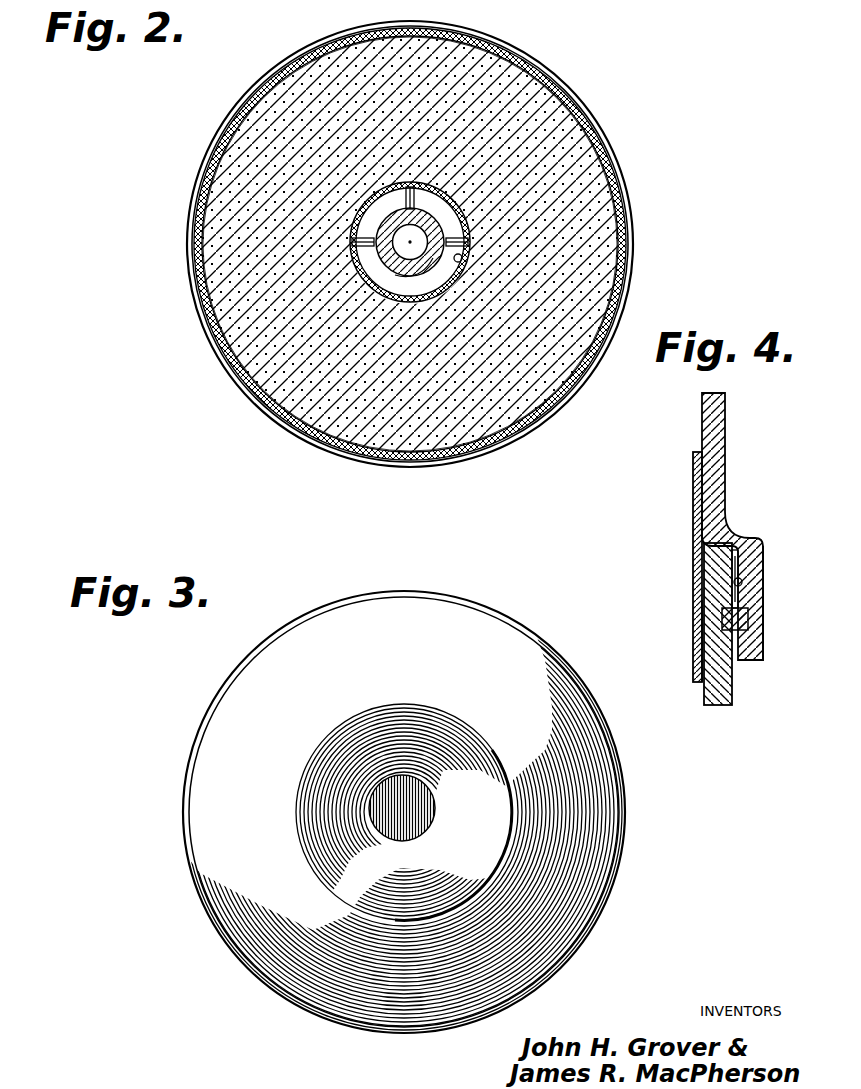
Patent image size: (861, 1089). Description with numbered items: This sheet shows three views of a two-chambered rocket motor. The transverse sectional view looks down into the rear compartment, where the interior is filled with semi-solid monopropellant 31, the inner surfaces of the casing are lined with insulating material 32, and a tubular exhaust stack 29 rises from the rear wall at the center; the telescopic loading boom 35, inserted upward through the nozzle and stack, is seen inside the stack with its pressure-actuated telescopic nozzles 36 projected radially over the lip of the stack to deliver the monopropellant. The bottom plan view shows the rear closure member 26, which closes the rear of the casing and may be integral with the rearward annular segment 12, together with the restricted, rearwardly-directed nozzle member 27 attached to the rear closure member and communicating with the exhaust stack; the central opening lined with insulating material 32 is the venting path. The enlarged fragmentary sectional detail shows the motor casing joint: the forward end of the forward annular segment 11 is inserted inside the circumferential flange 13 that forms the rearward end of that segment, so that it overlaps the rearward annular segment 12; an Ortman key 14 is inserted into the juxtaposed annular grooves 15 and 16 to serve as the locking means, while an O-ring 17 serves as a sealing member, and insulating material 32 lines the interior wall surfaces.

In FIG. 4, the forward annular segment 11 is at (720, 432).
In FIG. 2, the rearward annular segment 12 is at (636, 248).
In FIG. 4, the rearward annular segment 12 is at (722, 695).
In FIG. 3, the rearward annular segment 12 is at (616, 755).
In FIG. 2, the circumferential flange 13 is at (630, 214).
In FIG. 4, the circumferential flange 13 is at (755, 645).
In FIG. 3, the circumferential flange 13 is at (603, 708).
In FIG. 4, the Ortman key 14 is at (750, 625).
In FIG. 4, the annular groove 15 is at (740, 600).
In FIG. 4, the annular groove 16 is at (706, 642).
In FIG. 4, the O-ring 17 is at (742, 582).
In FIG. 3, the rear closure member 26 is at (566, 686).
In FIG. 3, the nozzle member 27 is at (466, 718).
In FIG. 2, the exhaust stack 29 is at (462, 258).
In FIG. 2, the semi-solid monopropellant 31 is at (552, 176).
In FIG. 2, the insulating material 32 is at (220, 338).
In FIG. 4, the insulating material 32 is at (700, 600).
In FIG. 3, the insulating material 32 is at (402, 820).
In FIG. 2, the telescopic loading boom 35 is at (408, 262).
In FIG. 2, the pressure-actuated telescopic nozzles 36 is at (413, 200).